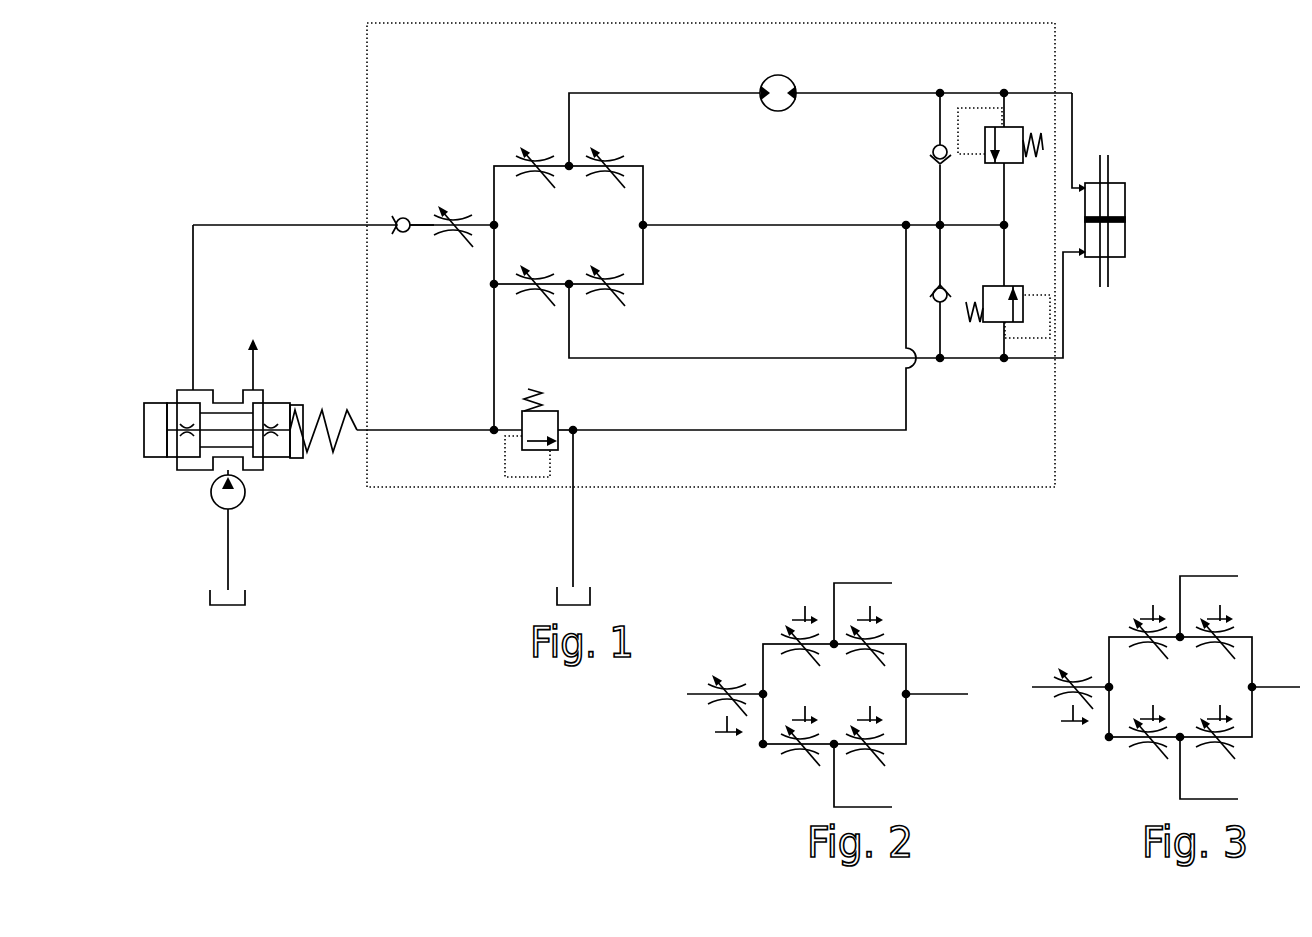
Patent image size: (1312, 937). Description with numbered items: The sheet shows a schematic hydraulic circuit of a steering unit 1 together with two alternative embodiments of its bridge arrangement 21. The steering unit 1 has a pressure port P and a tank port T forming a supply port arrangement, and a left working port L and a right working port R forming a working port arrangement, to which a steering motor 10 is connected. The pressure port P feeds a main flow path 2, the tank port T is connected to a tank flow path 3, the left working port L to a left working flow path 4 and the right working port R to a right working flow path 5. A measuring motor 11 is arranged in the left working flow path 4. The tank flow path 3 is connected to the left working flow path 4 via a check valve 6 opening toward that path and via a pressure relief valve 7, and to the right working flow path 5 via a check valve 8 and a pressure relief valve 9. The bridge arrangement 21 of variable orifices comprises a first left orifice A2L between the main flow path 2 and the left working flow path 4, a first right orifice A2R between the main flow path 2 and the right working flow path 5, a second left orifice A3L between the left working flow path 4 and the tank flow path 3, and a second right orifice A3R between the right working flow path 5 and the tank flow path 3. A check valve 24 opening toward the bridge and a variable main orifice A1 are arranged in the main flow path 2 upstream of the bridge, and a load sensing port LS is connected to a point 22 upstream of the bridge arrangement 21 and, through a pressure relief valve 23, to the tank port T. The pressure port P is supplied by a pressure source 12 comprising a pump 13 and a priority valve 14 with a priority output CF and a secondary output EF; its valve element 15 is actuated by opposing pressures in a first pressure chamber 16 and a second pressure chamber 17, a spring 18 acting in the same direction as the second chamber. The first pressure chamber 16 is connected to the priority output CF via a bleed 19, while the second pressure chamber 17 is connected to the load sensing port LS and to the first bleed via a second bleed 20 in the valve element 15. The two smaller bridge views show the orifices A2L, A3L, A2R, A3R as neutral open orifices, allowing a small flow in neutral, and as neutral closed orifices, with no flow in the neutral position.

In FIG. 1, the steering unit 1 is at (1056, 44).
In FIG. 1, the main flow path 2 is at (427, 222).
In FIG. 1, the tank flow path 3 is at (752, 228).
In FIG. 1, the left working flow path 4 is at (848, 93).
In FIG. 1, the right working flow path 5 is at (843, 360).
In FIG. 1, the check valve 6 is at (935, 147).
In FIG. 1, the pressure relief valve 7 is at (1011, 134).
In FIG. 1, the check valve 8 is at (946, 304).
In FIG. 1, the pressure relief valve 9 is at (993, 312).
In FIG. 1, the steering motor 10 is at (1126, 198).
In FIG. 1, the measuring motor 11 is at (780, 80).
In FIG. 1, the pressure source 12 is at (166, 306).
In FIG. 1, the pump 13 is at (222, 503).
In FIG. 1, the priority valve 14 is at (145, 445).
In FIG. 1, the valve element 15 is at (175, 452).
In FIG. 1, the first pressure chamber 16 is at (152, 415).
In FIG. 1, the second pressure chamber 17 is at (295, 405).
In FIG. 1, the spring 18 is at (318, 430).
In FIG. 1, the bleed 19 is at (180, 423).
In FIG. 1, the second bleed 20 is at (278, 440).
In FIG. 1, the bridge arrangement 21 is at (536, 212).
In FIG. 2, the bridge arrangement 21 is at (827, 694).
In FIG. 3, the bridge arrangement 21 is at (1166, 687).
In FIG. 1, the point 22 is at (494, 226).
In FIG. 1, the pressure relief valve 23 is at (552, 410).
In FIG. 1, the check valve 24 is at (403, 232).
In FIG. 1, the pressure port P is at (363, 223).
In FIG. 1, the tank port T is at (576, 487).
In FIG. 1, the left working port L is at (1056, 93).
In FIG. 1, the right working port R is at (1064, 360).
In FIG. 1, the load sensing port LS is at (362, 433).
In FIG. 1, the priority output CF is at (195, 390).
In FIG. 1, the secondary output EF is at (256, 388).
In FIG. 1, the variable main orifice A1 is at (454, 217).
In FIG. 2, the variable main orifice A1 is at (727, 692).
In FIG. 3, the variable main orifice A1 is at (1072, 683).
In FIG. 1, the first left orifice A2L is at (537, 182).
In FIG. 2, the first left orifice A2L is at (804, 648).
In FIG. 3, the first left orifice A2L is at (1148, 644).
In FIG. 1, the second left orifice A3L is at (605, 182).
In FIG. 2, the second left orifice A3L is at (871, 648).
In FIG. 3, the second left orifice A3L is at (1219, 644).
In FIG. 1, the first right orifice A2R is at (540, 300).
In FIG. 2, the first right orifice A2R is at (805, 749).
In FIG. 3, the first right orifice A2R is at (1145, 746).
In FIG. 1, the second right orifice A3R is at (611, 300).
In FIG. 2, the second right orifice A3R is at (871, 749).
In FIG. 3, the second right orifice A3R is at (1215, 746).